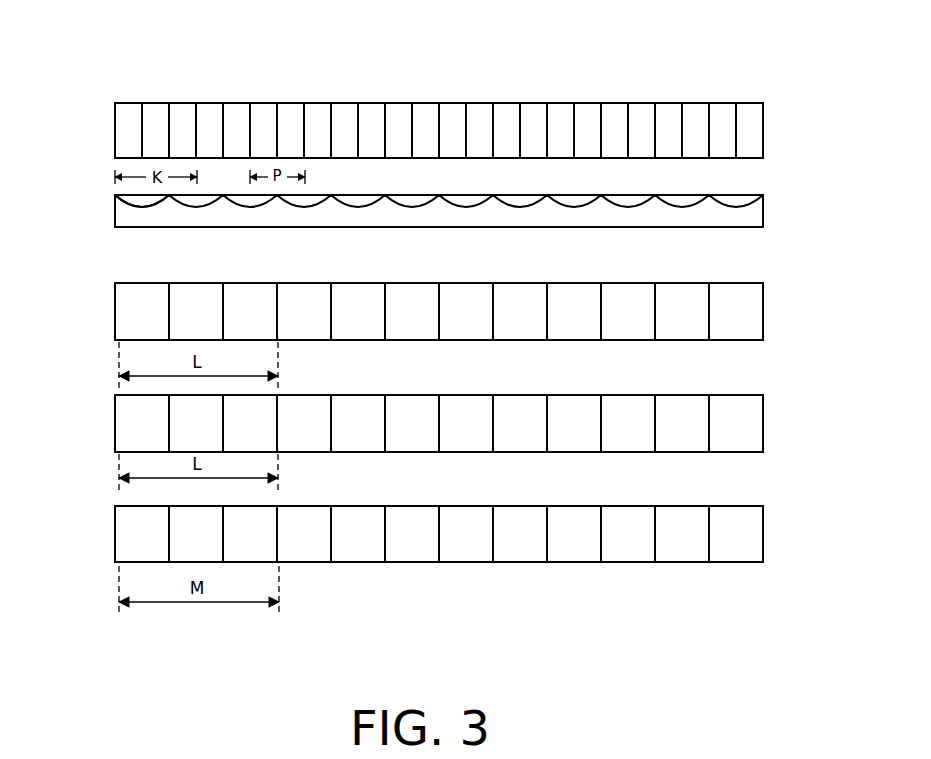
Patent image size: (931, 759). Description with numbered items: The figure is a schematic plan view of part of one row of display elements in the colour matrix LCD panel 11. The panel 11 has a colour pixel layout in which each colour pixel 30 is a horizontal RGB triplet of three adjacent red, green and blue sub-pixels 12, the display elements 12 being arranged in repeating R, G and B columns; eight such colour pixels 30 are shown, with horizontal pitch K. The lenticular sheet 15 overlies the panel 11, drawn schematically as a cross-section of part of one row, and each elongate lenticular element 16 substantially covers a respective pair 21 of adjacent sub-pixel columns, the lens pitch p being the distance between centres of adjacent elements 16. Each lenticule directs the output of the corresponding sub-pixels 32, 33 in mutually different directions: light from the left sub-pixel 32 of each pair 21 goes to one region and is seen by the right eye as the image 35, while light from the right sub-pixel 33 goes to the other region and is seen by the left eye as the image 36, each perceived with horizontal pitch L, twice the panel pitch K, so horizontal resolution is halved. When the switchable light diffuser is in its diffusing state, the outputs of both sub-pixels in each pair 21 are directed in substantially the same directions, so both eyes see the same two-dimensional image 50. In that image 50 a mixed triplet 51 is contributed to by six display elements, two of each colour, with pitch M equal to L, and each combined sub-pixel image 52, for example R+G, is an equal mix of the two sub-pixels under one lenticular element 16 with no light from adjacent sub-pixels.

The colour matrix LCD panel 11 is at (115, 131).
The sub-pixel 12 is at (128, 103).
The lenticular sheet 15 is at (115, 209).
The elongate lenticular element 16 is at (150, 205).
The pair of adjacent sub-pixel columns 21 is at (382, 86).
The colour pixel 30 is at (275, 92).
The left sub-pixel of the pair 32 is at (613, 103).
The right sub-pixel of the pair 33 is at (477, 103).
The image seen at region A 35 is at (788, 283).
The image seen at region B 36 is at (788, 395).
The image seen by both eyes 50 is at (84, 506).
The mixed triplet 51 is at (607, 583).
The combined sub-pixel image 52 is at (118, 505).